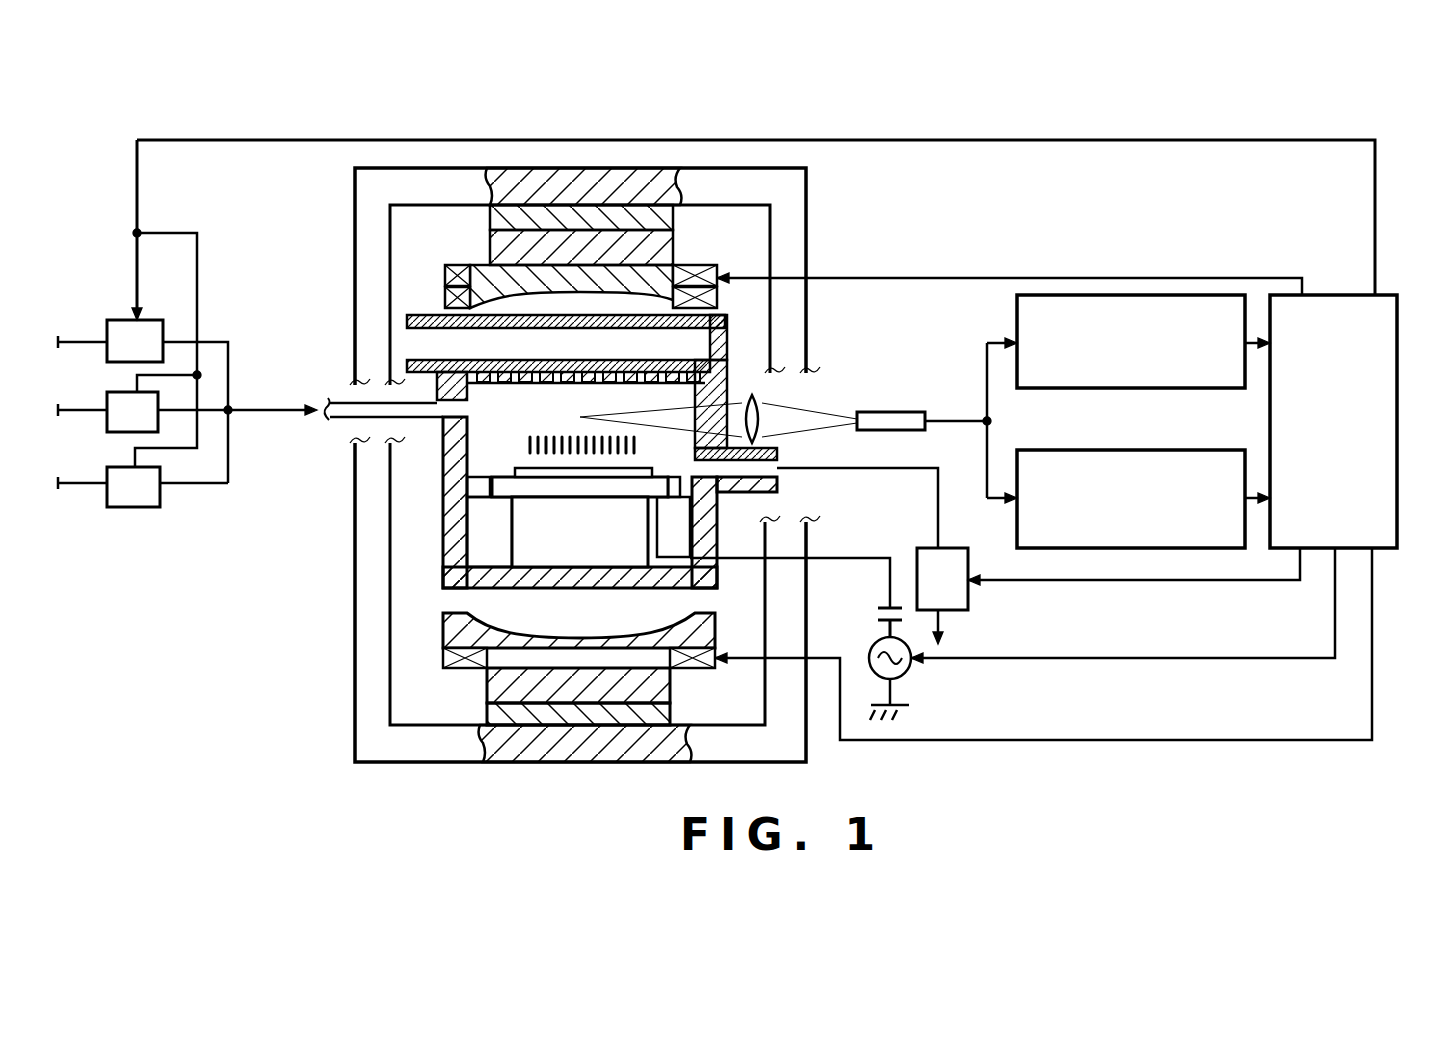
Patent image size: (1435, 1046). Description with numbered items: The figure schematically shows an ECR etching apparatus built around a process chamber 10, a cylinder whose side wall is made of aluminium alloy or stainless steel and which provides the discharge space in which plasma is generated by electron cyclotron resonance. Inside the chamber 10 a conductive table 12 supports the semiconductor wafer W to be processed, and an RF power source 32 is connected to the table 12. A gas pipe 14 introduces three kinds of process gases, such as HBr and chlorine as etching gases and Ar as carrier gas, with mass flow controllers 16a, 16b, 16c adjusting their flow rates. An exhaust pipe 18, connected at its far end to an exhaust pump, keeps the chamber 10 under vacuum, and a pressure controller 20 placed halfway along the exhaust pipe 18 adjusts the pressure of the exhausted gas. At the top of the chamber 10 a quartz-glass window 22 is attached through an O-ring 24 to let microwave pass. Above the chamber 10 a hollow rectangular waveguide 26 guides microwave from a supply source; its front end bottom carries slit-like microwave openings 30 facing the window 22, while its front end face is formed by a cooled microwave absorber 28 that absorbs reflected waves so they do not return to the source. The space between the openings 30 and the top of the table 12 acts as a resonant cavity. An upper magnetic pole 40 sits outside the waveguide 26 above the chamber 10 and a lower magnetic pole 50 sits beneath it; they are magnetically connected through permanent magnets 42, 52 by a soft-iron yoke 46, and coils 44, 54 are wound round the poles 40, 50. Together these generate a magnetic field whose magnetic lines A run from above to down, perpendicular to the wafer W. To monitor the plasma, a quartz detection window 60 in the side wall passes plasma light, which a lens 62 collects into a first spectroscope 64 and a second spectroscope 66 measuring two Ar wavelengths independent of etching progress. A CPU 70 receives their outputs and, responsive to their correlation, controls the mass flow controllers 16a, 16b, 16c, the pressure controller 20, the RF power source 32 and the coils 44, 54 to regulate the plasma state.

The process chamber 10 is at (490, 425).
The conductive table 12 is at (656, 486).
The gas pipe 14 is at (362, 418).
The mass flow controller 16a is at (107, 336).
The mass flow controller 16b is at (107, 406).
The mass flow controller 16c is at (107, 481).
The exhaust pipe 18 is at (778, 470).
The pressure controller 20 is at (968, 590).
The window 22 is at (585, 384).
The O-ring 24 is at (456, 368).
The hollow rectangular waveguide 26 is at (560, 330).
The microwave absorber 28 is at (728, 338).
The microwave openings 30 is at (500, 385).
The RF power source 32 is at (906, 672).
The upper magnetic pole 40 is at (688, 270).
The permanent magnet 42 is at (500, 244).
The magnetic field generating coil 44 is at (465, 268).
The yoke 46 is at (358, 222).
The lower magnetic pole 50 is at (675, 630).
The permanent magnet 52 is at (487, 690).
The magnetic field generating coil 54 is at (697, 672).
The detection window 60 is at (693, 420).
The lens 62 is at (763, 416).
The first spectroscope 64 is at (1017, 326).
The second spectroscope 66 is at (1168, 450).
The CPU 70 is at (1322, 295).
The magnetic lines A is at (525, 448).
The semiconductor wafer W is at (611, 488).